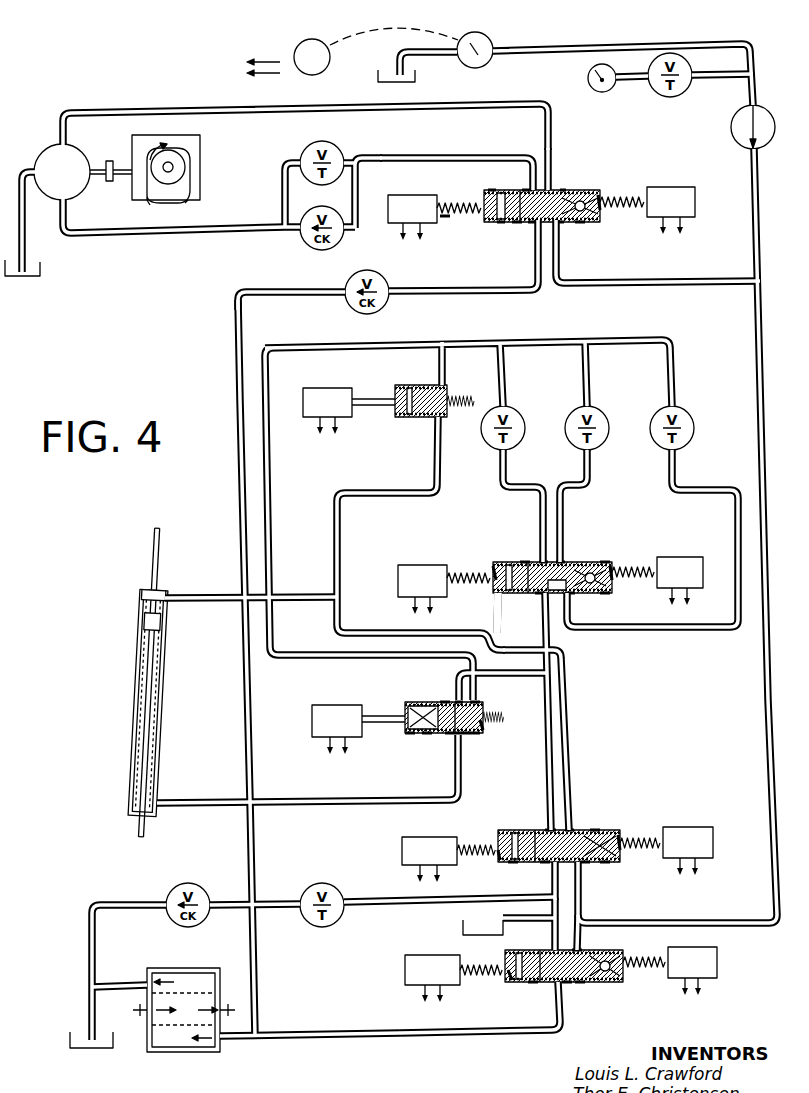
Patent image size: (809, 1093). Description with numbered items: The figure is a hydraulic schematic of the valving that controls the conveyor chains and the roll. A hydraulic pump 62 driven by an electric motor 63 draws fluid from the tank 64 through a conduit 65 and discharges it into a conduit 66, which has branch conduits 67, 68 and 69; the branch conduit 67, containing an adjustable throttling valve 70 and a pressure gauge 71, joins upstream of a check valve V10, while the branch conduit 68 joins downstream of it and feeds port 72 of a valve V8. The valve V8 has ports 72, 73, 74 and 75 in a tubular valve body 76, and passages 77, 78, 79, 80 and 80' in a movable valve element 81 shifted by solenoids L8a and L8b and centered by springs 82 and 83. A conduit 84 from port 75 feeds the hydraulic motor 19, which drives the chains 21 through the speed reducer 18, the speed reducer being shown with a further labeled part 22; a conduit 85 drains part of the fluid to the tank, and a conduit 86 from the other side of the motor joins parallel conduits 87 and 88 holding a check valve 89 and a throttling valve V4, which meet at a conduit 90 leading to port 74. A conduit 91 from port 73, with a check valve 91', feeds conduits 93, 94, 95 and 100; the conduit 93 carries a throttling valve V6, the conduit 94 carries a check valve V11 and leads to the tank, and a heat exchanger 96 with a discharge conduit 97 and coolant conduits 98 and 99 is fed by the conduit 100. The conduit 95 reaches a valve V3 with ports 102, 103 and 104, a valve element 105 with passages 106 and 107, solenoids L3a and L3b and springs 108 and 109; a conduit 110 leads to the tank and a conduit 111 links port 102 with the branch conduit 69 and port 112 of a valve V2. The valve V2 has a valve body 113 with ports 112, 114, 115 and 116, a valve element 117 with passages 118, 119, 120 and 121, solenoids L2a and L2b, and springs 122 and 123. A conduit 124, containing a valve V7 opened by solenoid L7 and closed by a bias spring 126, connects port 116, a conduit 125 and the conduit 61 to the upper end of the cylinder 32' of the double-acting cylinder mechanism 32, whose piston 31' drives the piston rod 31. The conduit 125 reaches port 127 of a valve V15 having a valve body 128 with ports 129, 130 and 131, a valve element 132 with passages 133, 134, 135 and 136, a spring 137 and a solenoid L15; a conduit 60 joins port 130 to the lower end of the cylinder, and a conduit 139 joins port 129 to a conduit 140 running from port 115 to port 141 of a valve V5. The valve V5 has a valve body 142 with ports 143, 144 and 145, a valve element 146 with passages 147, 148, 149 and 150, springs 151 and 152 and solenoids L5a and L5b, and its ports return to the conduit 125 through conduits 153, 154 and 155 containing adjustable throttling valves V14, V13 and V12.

The speed reducer 18 is at (200, 160).
The hydraulic motor 19 is at (80, 147).
The chains 21 is at (181, 203).
The pump inlet 22 is at (147, 205).
The piston rod 31 is at (166, 682).
The piston 31' is at (174, 624).
The cylinder mechanism 32 is at (122, 702).
The cylinder 32' is at (121, 634).
The conduit 60 is at (180, 803).
The conduit 61 is at (193, 595).
The hydraulic pump 62 is at (492, 62).
The electric motor 63 is at (316, 75).
The reservoir or tank 64 is at (61, 1040).
The conduit 65 is at (433, 62).
The conduit 66 is at (603, 45).
The branch conduit 67 is at (693, 75).
The branch conduit 68 is at (690, 285).
The branch conduit 69 is at (686, 921).
The adjustable throttling valve 70 is at (655, 95).
The pressure gauge 71 is at (598, 92).
The port 72 is at (560, 223).
The port 73 is at (535, 223).
The port 74 is at (527, 190).
The port 75 is at (563, 190).
The tubular valve body 76 is at (498, 222).
The passage 77 is at (610, 197).
The passage 78 is at (585, 225).
The passage 79 is at (519, 223).
The passage 80 is at (481, 178).
The passage 80' is at (532, 156).
The movable valve element 81 is at (478, 224).
The spring 82 is at (443, 240).
The spring 83 is at (628, 210).
The conduit 84 is at (223, 113).
The conduit 85 is at (24, 215).
The conduit 86 is at (168, 235).
The conduit 87 is at (358, 200).
The conduit 88 is at (283, 201).
The check valve 89 is at (312, 246).
The conduit 90 is at (470, 148).
The conduit 91 is at (226, 668).
The check valve 91' is at (388, 273).
The conduit 93 is at (267, 900).
The conduit 94 is at (209, 895).
The conduit 95 is at (290, 1033).
The heat exchanger 96 is at (190, 970).
The discharge conduit 97 is at (115, 985).
The coolant inlet conduit 98 is at (138, 1016).
The coolant outlet conduit 99 is at (227, 1008).
The conduit 100 is at (243, 1040).
The port 102 is at (582, 946).
The port 103 is at (550, 950).
The port 104 is at (570, 985).
The movable valve element 105 is at (535, 983).
The passage 106 is at (515, 982).
The passage 107 is at (585, 985).
The spring 108 is at (480, 978).
The spring 109 is at (650, 975).
The conduit 110 is at (525, 920).
The conduit 111 is at (592, 928).
The port 112 is at (583, 864).
The tubular valve body 113 is at (608, 864).
The port 114 is at (545, 864).
The port 115 is at (546, 830).
The port 116 is at (575, 830).
The movable valve element 117 is at (640, 838).
The passage 118 is at (495, 864).
The passage 119 is at (512, 864).
The passage 120 is at (600, 832).
The passage 121 is at (606, 912).
The spring 122 is at (468, 840).
The spring 123 is at (640, 850).
The conduit 124 is at (340, 555).
The conduit 125 is at (495, 340).
The bias spring 126 is at (448, 414).
The port 127 is at (460, 676).
The tubular valve body 128 is at (485, 728).
The port 129 is at (445, 702).
The port 130 is at (452, 740).
The port 131 is at (478, 735).
The movable valve element 132 is at (480, 703).
The passage 133 is at (460, 740).
The passage 134 is at (468, 740).
The passage 135 is at (426, 735).
The passage 136 is at (408, 735).
The spring 137 is at (493, 712).
The conduit 139 is at (482, 668).
The conduit 140 is at (558, 643).
The port 141 is at (540, 594).
The tubular valve body 142 is at (620, 594).
The port 143 is at (525, 562).
The port 144 is at (570, 560).
The port 145 is at (570, 594).
The movable valve element 146 is at (503, 594).
The passage 147 is at (497, 562).
The passage 148 is at (497, 562).
The passage 149 is at (615, 565).
The passage 150 is at (622, 560).
The spring 151 is at (478, 590).
The spring 152 is at (650, 590).
The conduit 153 is at (730, 633).
The conduit 154 is at (592, 482).
The conduit 155 is at (500, 480).
The valve V2 is at (605, 830).
The valve V3 is at (595, 982).
The adjustable throttling valve V4 is at (340, 143).
The valve V5 is at (583, 562).
The adjustable throttling valve V6 is at (330, 883).
The valve V7 is at (440, 385).
The valve V8 is at (582, 190).
The check valve V10 is at (728, 132).
The check valve V11 is at (182, 880).
The adjustable throttling valve V12 is at (525, 432).
The adjustable throttling valve V13 is at (608, 430).
The adjustable throttling valve V14 is at (695, 430).
The valve V15 is at (400, 738).
The solenoid L2a is at (412, 837).
The solenoid L2b is at (690, 828).
The solenoid L3a is at (415, 955).
The solenoid L3b is at (717, 962).
The solenoid L5a is at (675, 556).
The solenoid L5b is at (411, 565).
The solenoid L7 is at (320, 386).
The solenoid L8a is at (408, 192).
The solenoid L8b is at (695, 203).
The solenoid L15 is at (332, 705).